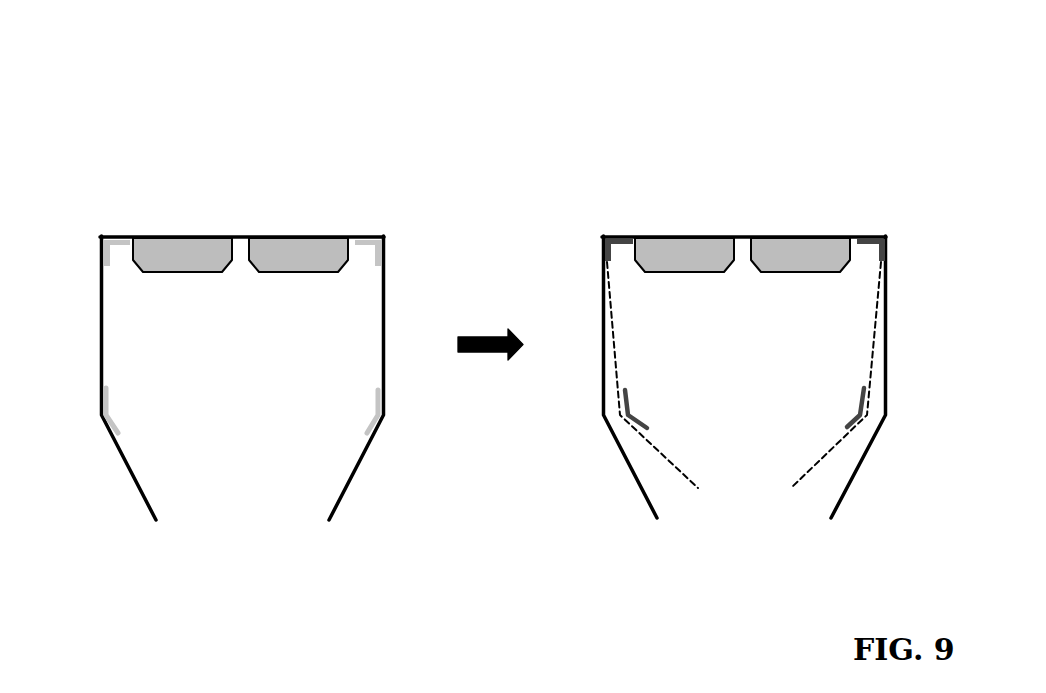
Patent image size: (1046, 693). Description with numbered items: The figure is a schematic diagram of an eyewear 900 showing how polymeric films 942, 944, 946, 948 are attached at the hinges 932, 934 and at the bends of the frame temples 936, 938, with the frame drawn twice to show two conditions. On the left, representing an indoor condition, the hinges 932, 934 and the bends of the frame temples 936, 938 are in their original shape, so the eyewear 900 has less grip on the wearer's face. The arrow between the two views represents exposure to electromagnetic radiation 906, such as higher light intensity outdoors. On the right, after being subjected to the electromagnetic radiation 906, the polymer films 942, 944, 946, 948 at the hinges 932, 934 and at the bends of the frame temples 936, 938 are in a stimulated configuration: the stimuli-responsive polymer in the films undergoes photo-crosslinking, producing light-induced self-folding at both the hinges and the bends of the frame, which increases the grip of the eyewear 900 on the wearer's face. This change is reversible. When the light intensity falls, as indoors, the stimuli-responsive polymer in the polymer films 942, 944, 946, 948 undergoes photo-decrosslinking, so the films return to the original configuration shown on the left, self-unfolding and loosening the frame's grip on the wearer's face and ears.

The eyewear 900 is at (227, 135).
The electromagnetic radiation 906 is at (490, 320).
The hinge 932 is at (108, 238).
The hinge 934 is at (373, 235).
The frame temple 936 is at (101, 413).
The frame temple 938 is at (387, 410).
The polymeric film 942 is at (110, 257).
The polymeric film 944 is at (377, 255).
The polymeric film 946 is at (112, 420).
The polymeric film 948 is at (370, 428).